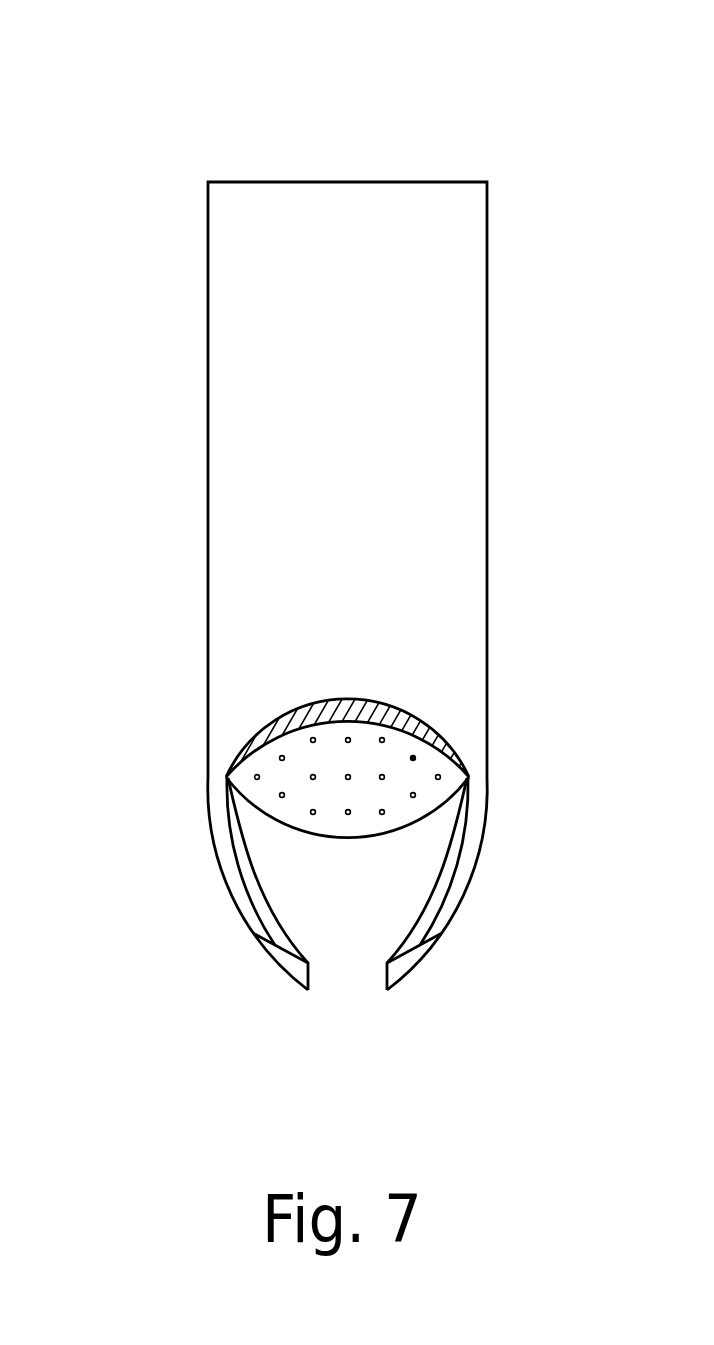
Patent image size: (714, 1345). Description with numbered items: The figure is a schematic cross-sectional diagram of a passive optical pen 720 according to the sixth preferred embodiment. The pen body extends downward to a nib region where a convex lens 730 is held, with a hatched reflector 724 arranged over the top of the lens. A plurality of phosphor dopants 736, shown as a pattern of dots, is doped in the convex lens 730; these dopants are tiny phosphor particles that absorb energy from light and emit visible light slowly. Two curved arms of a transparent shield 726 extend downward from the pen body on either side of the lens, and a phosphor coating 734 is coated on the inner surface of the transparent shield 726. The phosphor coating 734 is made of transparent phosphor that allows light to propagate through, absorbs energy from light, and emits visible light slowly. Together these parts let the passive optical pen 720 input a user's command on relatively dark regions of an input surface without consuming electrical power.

The passive optical pen 720 is at (193, 125).
The reflector 724 is at (253, 738).
The transparent shield 726 is at (218, 812).
The convex lens 730 is at (400, 812).
The phosphor coating 734 is at (272, 923).
The phosphor dopants 736 is at (413, 758).